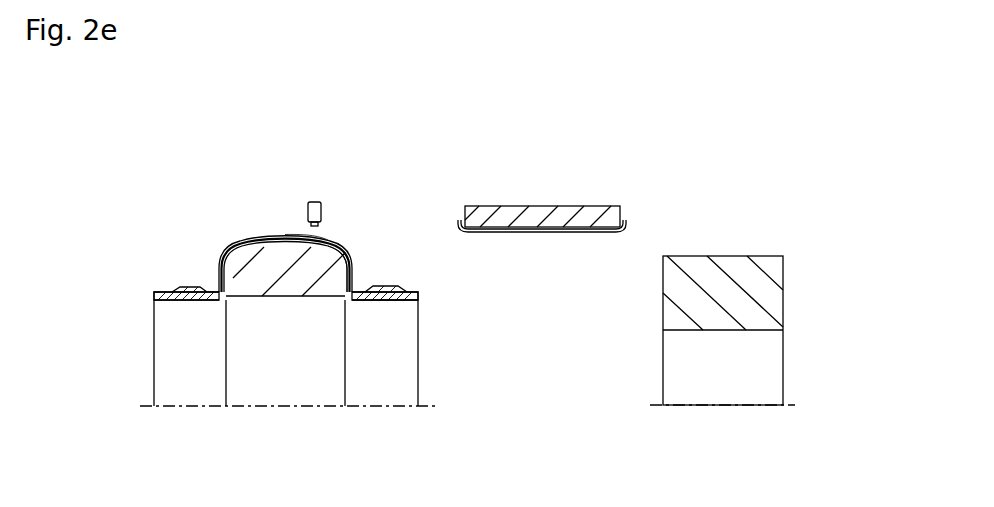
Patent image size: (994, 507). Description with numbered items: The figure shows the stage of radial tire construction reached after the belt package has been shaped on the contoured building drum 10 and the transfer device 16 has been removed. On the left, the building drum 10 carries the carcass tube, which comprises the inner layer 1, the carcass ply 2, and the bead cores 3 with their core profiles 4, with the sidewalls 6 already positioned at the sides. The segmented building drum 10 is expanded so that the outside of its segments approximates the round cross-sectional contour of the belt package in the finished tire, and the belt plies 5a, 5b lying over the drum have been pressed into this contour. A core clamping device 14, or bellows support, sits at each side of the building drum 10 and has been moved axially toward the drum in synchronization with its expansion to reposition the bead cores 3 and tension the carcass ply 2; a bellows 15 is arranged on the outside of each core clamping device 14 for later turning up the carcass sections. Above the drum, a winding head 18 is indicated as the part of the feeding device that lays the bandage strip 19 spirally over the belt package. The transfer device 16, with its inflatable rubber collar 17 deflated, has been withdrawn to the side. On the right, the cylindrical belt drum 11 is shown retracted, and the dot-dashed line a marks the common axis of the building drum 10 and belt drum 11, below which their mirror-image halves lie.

The inner layer 1 is at (262, 243).
The carcass ply 2 is at (193, 288).
The bead cores 3 is at (212, 288).
The core profiles 4 is at (352, 282).
The belt ply 5a is at (256, 237).
The belt ply 5b is at (280, 236).
The sidewalls 6 is at (170, 287).
The building drum 10 is at (222, 378).
The belt drum 11 is at (743, 300).
The core clamping device 14 is at (375, 360).
The bellows 15 is at (402, 297).
The transfer device 16 is at (538, 217).
The inflatable rubber collar 17 is at (627, 218).
The winding head 18 is at (315, 203).
The strip 19 is at (328, 235).
The axis a is at (290, 408).